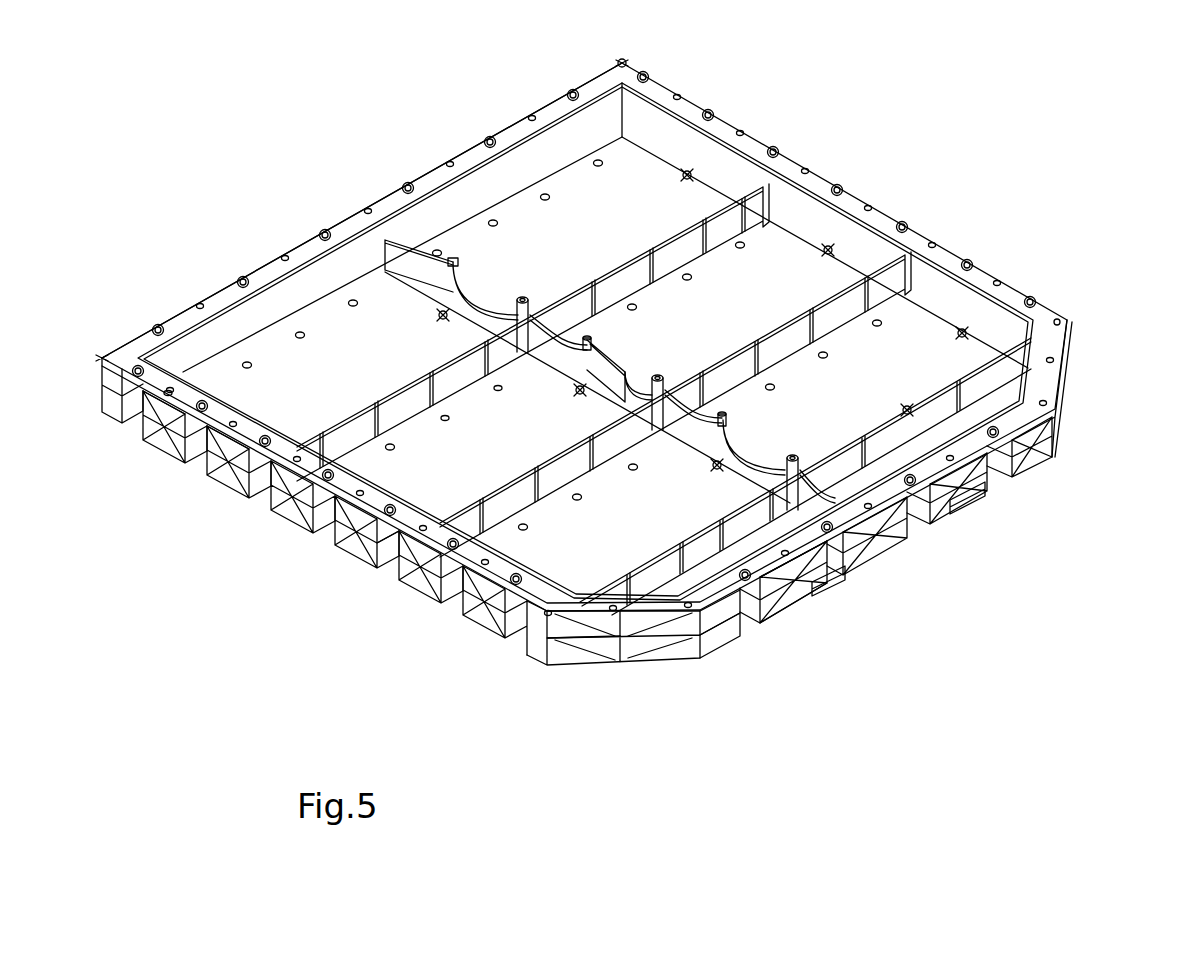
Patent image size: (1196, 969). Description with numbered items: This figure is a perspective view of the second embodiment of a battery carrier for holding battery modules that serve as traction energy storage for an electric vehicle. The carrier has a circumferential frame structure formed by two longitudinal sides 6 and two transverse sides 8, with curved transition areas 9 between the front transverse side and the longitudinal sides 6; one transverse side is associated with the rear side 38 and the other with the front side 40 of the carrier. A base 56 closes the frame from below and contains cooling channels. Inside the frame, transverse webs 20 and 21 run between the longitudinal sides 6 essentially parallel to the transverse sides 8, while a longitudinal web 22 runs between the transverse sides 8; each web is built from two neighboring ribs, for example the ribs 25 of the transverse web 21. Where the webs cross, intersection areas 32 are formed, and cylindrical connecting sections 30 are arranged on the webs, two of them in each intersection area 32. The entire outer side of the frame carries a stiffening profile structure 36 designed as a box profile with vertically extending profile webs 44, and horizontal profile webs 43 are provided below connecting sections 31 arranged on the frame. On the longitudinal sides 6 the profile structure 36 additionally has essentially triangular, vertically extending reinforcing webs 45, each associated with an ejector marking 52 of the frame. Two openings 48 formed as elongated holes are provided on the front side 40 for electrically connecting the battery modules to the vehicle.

The longitudinal side 6 is at (877, 182).
The transverse side 8 is at (365, 180).
The curved transition area 9 is at (628, 678).
The transverse web 20 is at (660, 235).
The transverse web 21 is at (907, 405).
The longitudinal web 22 is at (773, 452).
The rib 25 is at (697, 543).
The cylindrical connecting section 30 is at (459, 262).
The connecting section 31 is at (335, 479).
The intersection area 32 is at (527, 288).
The profile structure 36 is at (320, 557).
The rear side 38 is at (277, 225).
The front side 40 is at (797, 637).
The horizontal profile web 43 is at (403, 543).
The vertically extending profile web 44 is at (512, 632).
The reinforcing web 45 is at (150, 432).
The opening 48 is at (830, 595).
The ejector marking 52 is at (173, 393).
The base 56 is at (642, 168).